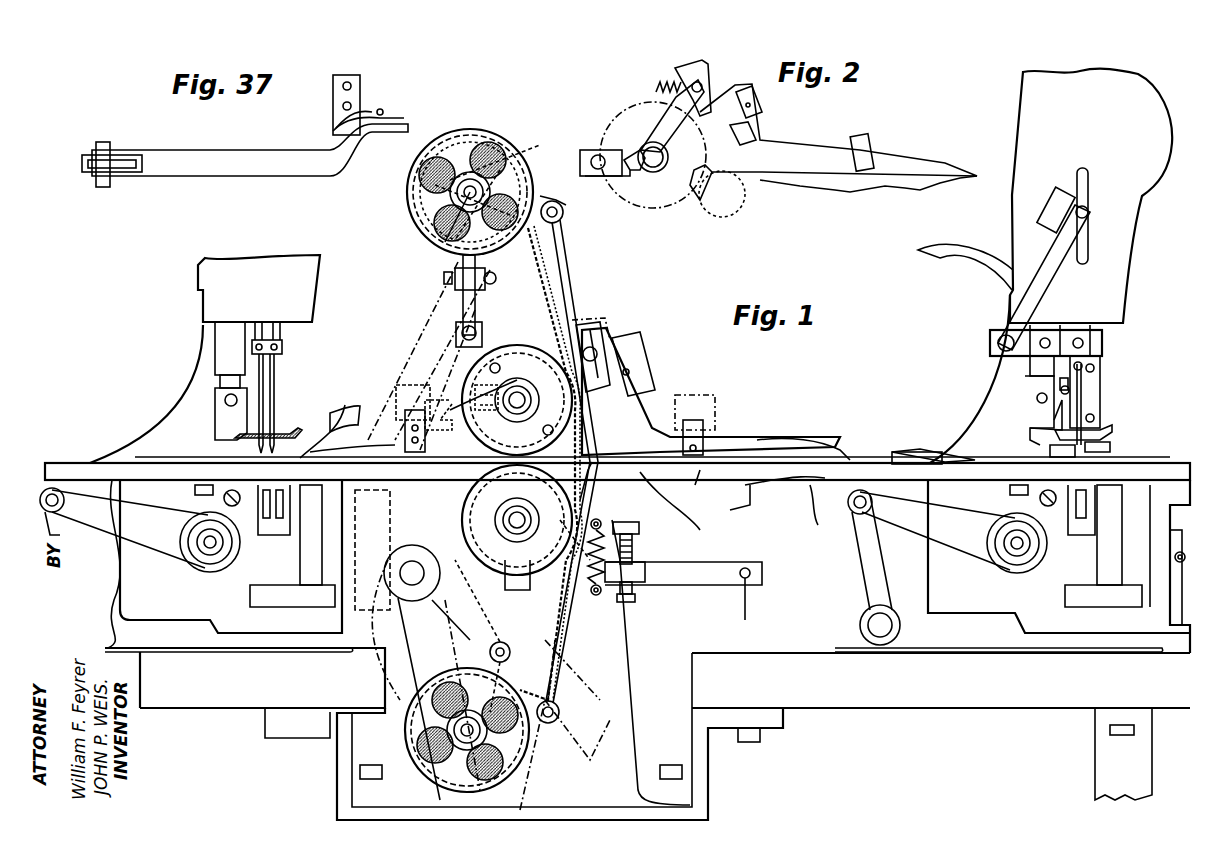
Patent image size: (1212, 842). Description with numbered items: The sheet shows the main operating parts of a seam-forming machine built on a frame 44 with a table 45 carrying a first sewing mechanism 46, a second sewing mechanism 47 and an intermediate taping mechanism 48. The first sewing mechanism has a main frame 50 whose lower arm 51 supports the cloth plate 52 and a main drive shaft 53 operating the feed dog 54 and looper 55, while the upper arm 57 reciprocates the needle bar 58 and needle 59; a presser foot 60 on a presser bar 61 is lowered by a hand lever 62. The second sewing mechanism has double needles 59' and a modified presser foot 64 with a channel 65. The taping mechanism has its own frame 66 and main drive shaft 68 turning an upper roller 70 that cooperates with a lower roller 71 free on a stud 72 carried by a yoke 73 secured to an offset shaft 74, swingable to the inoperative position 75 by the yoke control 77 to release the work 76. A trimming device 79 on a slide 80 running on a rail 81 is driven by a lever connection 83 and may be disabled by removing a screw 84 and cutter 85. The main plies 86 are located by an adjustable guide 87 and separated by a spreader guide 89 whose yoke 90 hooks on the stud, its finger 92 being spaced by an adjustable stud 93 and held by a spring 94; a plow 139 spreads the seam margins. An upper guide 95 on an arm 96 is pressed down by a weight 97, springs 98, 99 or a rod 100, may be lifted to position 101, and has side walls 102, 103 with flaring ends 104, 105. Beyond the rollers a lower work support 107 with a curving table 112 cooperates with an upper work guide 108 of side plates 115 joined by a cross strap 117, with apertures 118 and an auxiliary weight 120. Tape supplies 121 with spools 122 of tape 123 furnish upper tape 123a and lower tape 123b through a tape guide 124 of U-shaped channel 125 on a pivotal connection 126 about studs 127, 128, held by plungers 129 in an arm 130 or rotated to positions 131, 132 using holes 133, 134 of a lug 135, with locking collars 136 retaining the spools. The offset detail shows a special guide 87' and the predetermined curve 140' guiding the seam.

In FIG. 1, the frame 44 is at (872, 735).
In FIG. 1, the table 45 is at (205, 708).
In FIG. 1, the first sewing mechanism 46 is at (1157, 274).
In FIG. 1, the second sewing mechanism 47 is at (190, 294).
In FIG. 1, the taping mechanism 48 is at (633, 672).
In FIG. 1, the main frame 50 is at (990, 410).
In FIG. 1, the lower arm 51 is at (220, 646).
In FIG. 1, the cloth plate 52 is at (84, 452).
In FIG. 1, the main drive shaft 53 is at (208, 556).
In FIG. 1, the feed dog 54 is at (222, 506).
In FIG. 1, the looper 55 is at (282, 497).
In FIG. 2, the upper arm 57 is at (1024, 180).
In FIG. 1, the upper arm 57 is at (264, 276).
In FIG. 1, the needle bar 58 is at (285, 343).
In FIG. 37, the needle 59 is at (388, 97).
In FIG. 1, the needle 59 is at (1108, 404).
In FIG. 1, the double needle 59' is at (291, 403).
In FIG. 1, the presser foot 60 is at (1040, 428).
In FIG. 1, the presser bar 61 is at (222, 340).
In FIG. 1, the hand lever 62 is at (968, 252).
In FIG. 1, the presser foot 64 is at (218, 405).
In FIG. 1, the channel 65 is at (292, 437).
In FIG. 1, the frame 66 is at (630, 712).
In FIG. 2, the main drive shaft 68 is at (655, 170).
In FIG. 1, the main drive shaft 68 is at (520, 392).
In FIG. 2, the upper roller 70 is at (630, 208).
In FIG. 1, the upper roller 70 is at (519, 400).
In FIG. 37, the lower roller 71 is at (84, 180).
In FIG. 2, the lower roller 71 is at (745, 202).
In FIG. 1, the lower roller 71 is at (475, 502).
In FIG. 1, the stud 72 is at (515, 510).
In FIG. 1, the yoke 73 is at (548, 792).
In FIG. 1, the offset shaft 74 is at (412, 560).
In FIG. 1, the inoperative position 75 is at (400, 680).
In FIG. 1, the work 76 is at (778, 522).
In FIG. 1, the yoke control 77 is at (727, 570).
In FIG. 1, the trimming device 79 is at (1095, 418).
In FIG. 1, the slide 80 is at (1046, 340).
In FIG. 1, the rail 81 is at (1028, 392).
In FIG. 1, the lever connection 83 is at (1036, 302).
In FIG. 1, the screw 84 is at (1095, 385).
In FIG. 1, the cutter 85 is at (1070, 460).
In FIG. 1, the main plies 86 is at (820, 522).
In FIG. 1, the adjustable guide 87 is at (1100, 438).
In FIG. 37, the special guide 87' is at (366, 98).
In FIG. 37, the spreader guide 89 is at (263, 153).
In FIG. 1, the spreader guide 89 is at (885, 469).
In FIG. 37, the yoke 90 is at (119, 178).
In FIG. 1, the yoke 90 is at (545, 500).
In FIG. 37, the finger 92 is at (392, 118).
In FIG. 1, the finger 92 is at (1132, 470).
In FIG. 1, the adjustable stud 93 is at (642, 545).
In FIG. 1, the spring 94 is at (603, 530).
In FIG. 2, the upper guide 95 is at (760, 148).
In FIG. 1, the upper guide 95 is at (711, 391).
In FIG. 2, the arm 96 is at (672, 122).
In FIG. 1, the arm 96 is at (598, 335).
In FIG. 1, the weight 97 is at (723, 400).
In FIG. 2, the spring 98 is at (665, 72).
In FIG. 2, the spring 99 is at (612, 176).
In FIG. 2, the rod 100 is at (598, 150).
In FIG. 1, the inoperative position 101 is at (625, 335).
In FIG. 2, the side wall 102 is at (888, 160).
In FIG. 1, the side wall 102 is at (722, 435).
In FIG. 2, the side wall 103 is at (800, 163).
In FIG. 1, the side wall 103 is at (655, 430).
In FIG. 2, the flaring end 104 is at (976, 147).
In FIG. 1, the flaring end 104 is at (806, 440).
In FIG. 2, the flaring end 105 is at (890, 177).
In FIG. 1, the lower work support 107 is at (418, 478).
In FIG. 1, the upper work guide 108 is at (375, 443).
In FIG. 1, the table 112 is at (705, 505).
In FIG. 1, the side plate 115 is at (345, 418).
In FIG. 1, the cross strap 117 is at (414, 418).
In FIG. 1, the apertures 118 is at (486, 414).
In FIG. 1, the auxiliary weight 120 is at (447, 380).
In FIG. 1, the tape supply 121 is at (506, 128).
In FIG. 1, the spool 122 is at (470, 136).
In FIG. 1, the tape 123 is at (505, 160).
In FIG. 1, the upper tape 123a is at (568, 270).
In FIG. 1, the lower tape 123b is at (566, 600).
In FIG. 1, the tape guide 124 is at (552, 236).
In FIG. 1, the U-shaped channel 125 is at (570, 282).
In FIG. 1, the pivotal connection 126 is at (440, 212).
In FIG. 1, the stud 127 is at (425, 204).
In FIG. 1, the stud 128 is at (465, 738).
In FIG. 1, the plunger 129 is at (565, 210).
In FIG. 1, the arm 130 is at (543, 198).
In FIG. 1, the dot-and-dash line position 131 is at (412, 351).
In FIG. 1, the dot-and-dash line position 132 is at (368, 512).
In FIG. 1, the hole 133 is at (480, 287).
In FIG. 1, the hole 134 is at (492, 648).
In FIG. 1, the lug 135 is at (442, 355).
In FIG. 1, the locking collar 136 is at (492, 200).
In FIG. 1, the plow 139 is at (932, 452).
In FIG. 37, the predetermined curve 140' is at (380, 137).